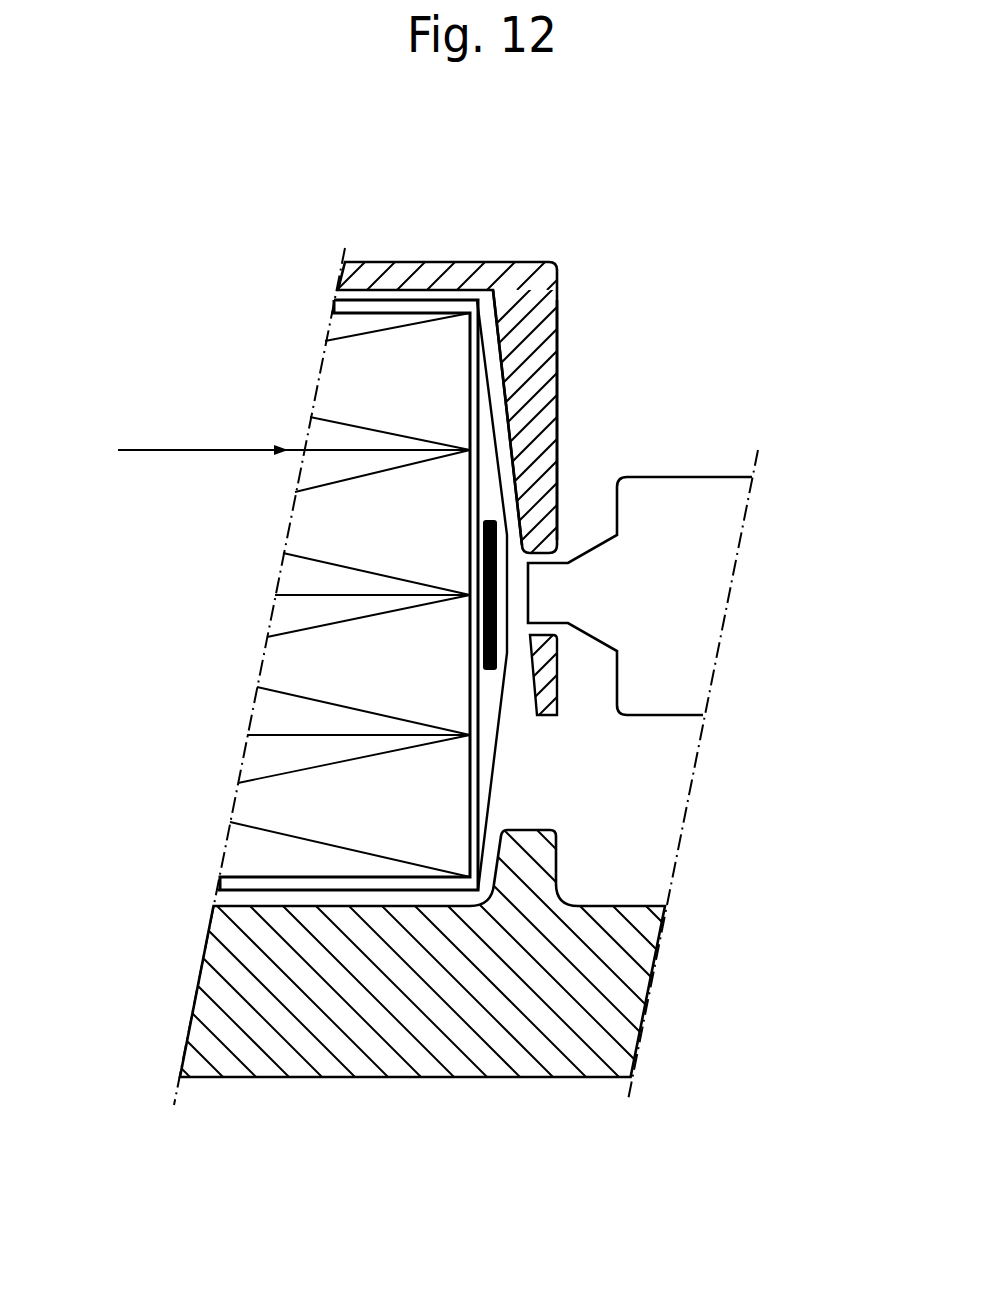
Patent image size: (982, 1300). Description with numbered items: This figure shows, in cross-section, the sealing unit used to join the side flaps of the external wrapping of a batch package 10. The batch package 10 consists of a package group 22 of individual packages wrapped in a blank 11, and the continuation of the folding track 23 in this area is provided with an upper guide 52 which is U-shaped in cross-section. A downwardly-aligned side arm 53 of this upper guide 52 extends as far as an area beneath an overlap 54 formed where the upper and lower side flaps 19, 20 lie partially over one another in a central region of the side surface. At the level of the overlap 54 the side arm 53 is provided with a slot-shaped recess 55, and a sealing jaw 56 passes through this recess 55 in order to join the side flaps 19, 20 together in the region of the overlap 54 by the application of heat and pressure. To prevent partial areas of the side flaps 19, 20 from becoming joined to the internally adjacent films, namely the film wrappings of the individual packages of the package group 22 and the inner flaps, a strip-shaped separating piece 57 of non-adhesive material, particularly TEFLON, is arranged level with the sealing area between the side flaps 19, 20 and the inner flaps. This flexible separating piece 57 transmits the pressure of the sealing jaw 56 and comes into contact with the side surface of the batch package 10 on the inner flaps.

The batch package 10 is at (250, 327).
The blank 11 is at (437, 300).
The upper side flap 19 is at (497, 413).
The lower side flap 20 is at (493, 765).
The package group 22 is at (200, 450).
The folding track 23 is at (337, 906).
The upper guide 52 is at (375, 233).
The side arm 53 is at (576, 427).
The overlap 54 is at (516, 578).
The slot-shaped recess 55 is at (545, 629).
The sealing jaw 56 is at (560, 596).
The separating piece 57 is at (480, 567).